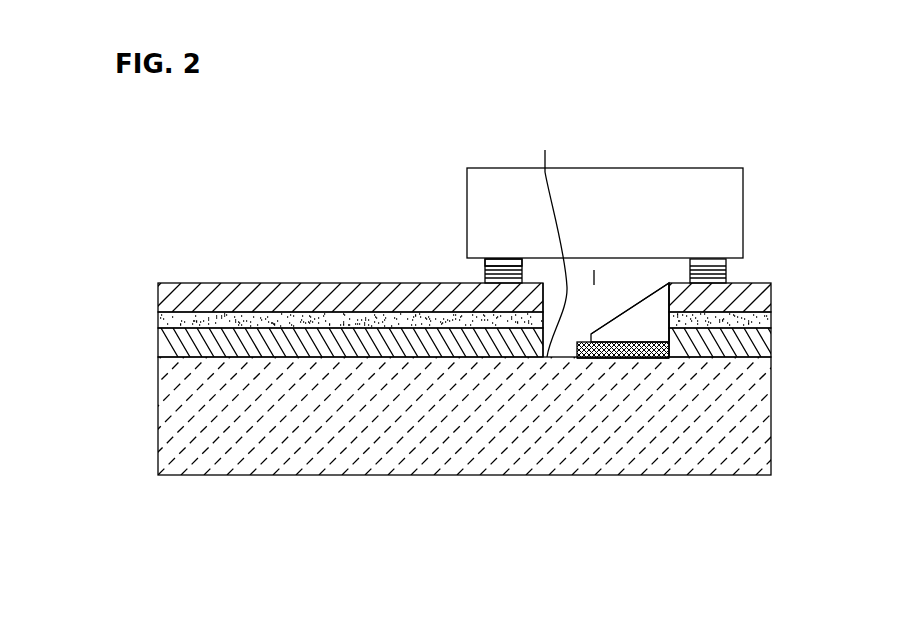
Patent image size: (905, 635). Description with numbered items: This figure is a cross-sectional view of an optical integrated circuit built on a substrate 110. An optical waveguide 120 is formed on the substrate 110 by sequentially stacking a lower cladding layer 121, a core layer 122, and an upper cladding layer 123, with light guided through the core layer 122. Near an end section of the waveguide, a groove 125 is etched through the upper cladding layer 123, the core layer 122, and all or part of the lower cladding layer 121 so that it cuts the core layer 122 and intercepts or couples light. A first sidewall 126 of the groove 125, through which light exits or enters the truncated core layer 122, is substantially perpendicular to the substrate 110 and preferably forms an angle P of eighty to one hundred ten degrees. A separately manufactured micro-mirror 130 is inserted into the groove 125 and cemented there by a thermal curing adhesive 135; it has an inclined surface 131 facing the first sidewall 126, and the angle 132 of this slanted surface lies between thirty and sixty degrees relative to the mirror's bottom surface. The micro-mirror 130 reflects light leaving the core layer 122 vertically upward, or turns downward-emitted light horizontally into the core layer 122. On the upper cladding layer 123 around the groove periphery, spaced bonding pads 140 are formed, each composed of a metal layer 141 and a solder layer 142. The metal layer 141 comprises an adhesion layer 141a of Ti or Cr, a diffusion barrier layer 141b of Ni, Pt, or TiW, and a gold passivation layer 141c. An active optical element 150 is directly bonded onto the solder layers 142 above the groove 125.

The substrate 110 is at (750, 428).
The optical waveguide 120 is at (433, 328).
The lower cladding layer 121 is at (158, 345).
The core layer 122 is at (158, 323).
The upper cladding layer 123 is at (158, 302).
The groove 125 is at (594, 296).
The first sidewall 126 is at (544, 357).
The angle p P is at (553, 239).
The micro-mirror 130 is at (622, 296).
The inclined surface 131 is at (652, 295).
The angle of the slanted surface 132 is at (598, 336).
The thermal curing adhesive 135 is at (641, 357).
The bonding pads 140 is at (547, 215).
The metal layer 141 is at (400, 241).
The adhesion layer 141a is at (485, 277).
The diffusion barrier layer 141b is at (485, 273).
The passivation layer 141c is at (485, 269).
The solder layer 142 is at (485, 265).
The active optical element 150 is at (733, 212).